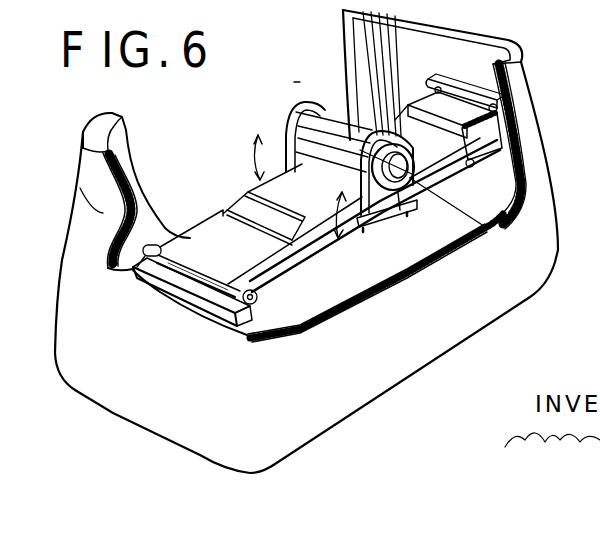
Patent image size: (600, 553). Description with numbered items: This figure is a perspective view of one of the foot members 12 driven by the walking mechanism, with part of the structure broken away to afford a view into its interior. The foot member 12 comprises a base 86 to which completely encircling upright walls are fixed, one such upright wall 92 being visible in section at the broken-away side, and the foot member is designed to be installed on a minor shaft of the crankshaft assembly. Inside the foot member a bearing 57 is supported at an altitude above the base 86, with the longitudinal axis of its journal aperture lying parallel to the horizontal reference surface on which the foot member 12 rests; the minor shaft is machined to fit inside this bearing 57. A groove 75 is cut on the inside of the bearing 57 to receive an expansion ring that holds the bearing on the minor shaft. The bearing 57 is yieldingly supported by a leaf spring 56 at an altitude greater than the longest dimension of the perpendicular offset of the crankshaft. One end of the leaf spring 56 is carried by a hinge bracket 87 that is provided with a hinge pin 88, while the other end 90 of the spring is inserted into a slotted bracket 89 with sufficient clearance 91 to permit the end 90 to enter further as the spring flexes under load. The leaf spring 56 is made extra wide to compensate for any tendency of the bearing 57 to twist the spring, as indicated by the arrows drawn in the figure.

The foot member 12 is at (483, 312).
The leaf spring 56 is at (327, 197).
The bearing 57 is at (336, 140).
The groove 75 is at (428, 174).
The base 86 is at (343, 290).
The hinge bracket 87 is at (240, 310).
The hinge pin 88 is at (258, 297).
The slotted bracket 89 is at (427, 105).
The end of the leaf spring 90 is at (440, 137).
The clearance 91 is at (512, 128).
The side flange 92 is at (137, 188).